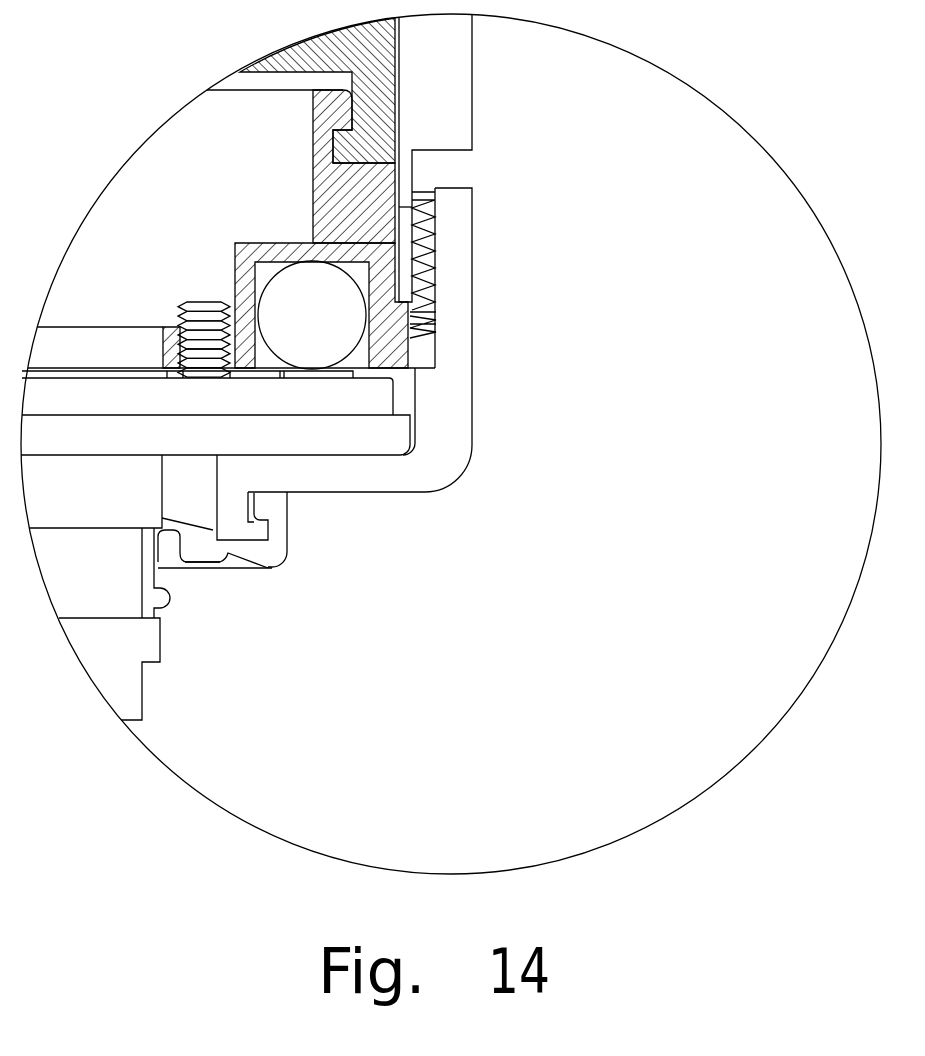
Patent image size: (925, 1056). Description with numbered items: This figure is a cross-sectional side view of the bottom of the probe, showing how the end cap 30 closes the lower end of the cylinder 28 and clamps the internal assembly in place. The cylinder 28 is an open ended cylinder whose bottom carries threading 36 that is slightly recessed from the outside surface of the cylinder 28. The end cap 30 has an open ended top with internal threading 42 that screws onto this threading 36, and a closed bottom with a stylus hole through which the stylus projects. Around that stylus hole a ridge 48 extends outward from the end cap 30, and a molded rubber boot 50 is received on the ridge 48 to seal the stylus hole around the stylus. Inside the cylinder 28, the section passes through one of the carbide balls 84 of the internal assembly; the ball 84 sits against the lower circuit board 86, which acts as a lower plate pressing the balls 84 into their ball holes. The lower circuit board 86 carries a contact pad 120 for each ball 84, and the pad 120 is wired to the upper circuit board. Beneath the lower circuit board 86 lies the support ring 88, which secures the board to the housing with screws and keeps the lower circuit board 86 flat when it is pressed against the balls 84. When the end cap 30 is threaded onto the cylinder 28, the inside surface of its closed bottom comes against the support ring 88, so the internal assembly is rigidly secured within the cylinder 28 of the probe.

The cylinder 28 is at (472, 97).
The threading 36 is at (410, 243).
The end cap 30 is at (472, 258).
The internal threading 42 is at (436, 313).
The carbide balls 84 is at (343, 332).
The contact pad 120 is at (360, 378).
The lower circuit board 86 is at (337, 397).
The support ring 88 is at (333, 437).
The molded rubber boot 50 is at (285, 552).
The ridge 48 is at (258, 533).